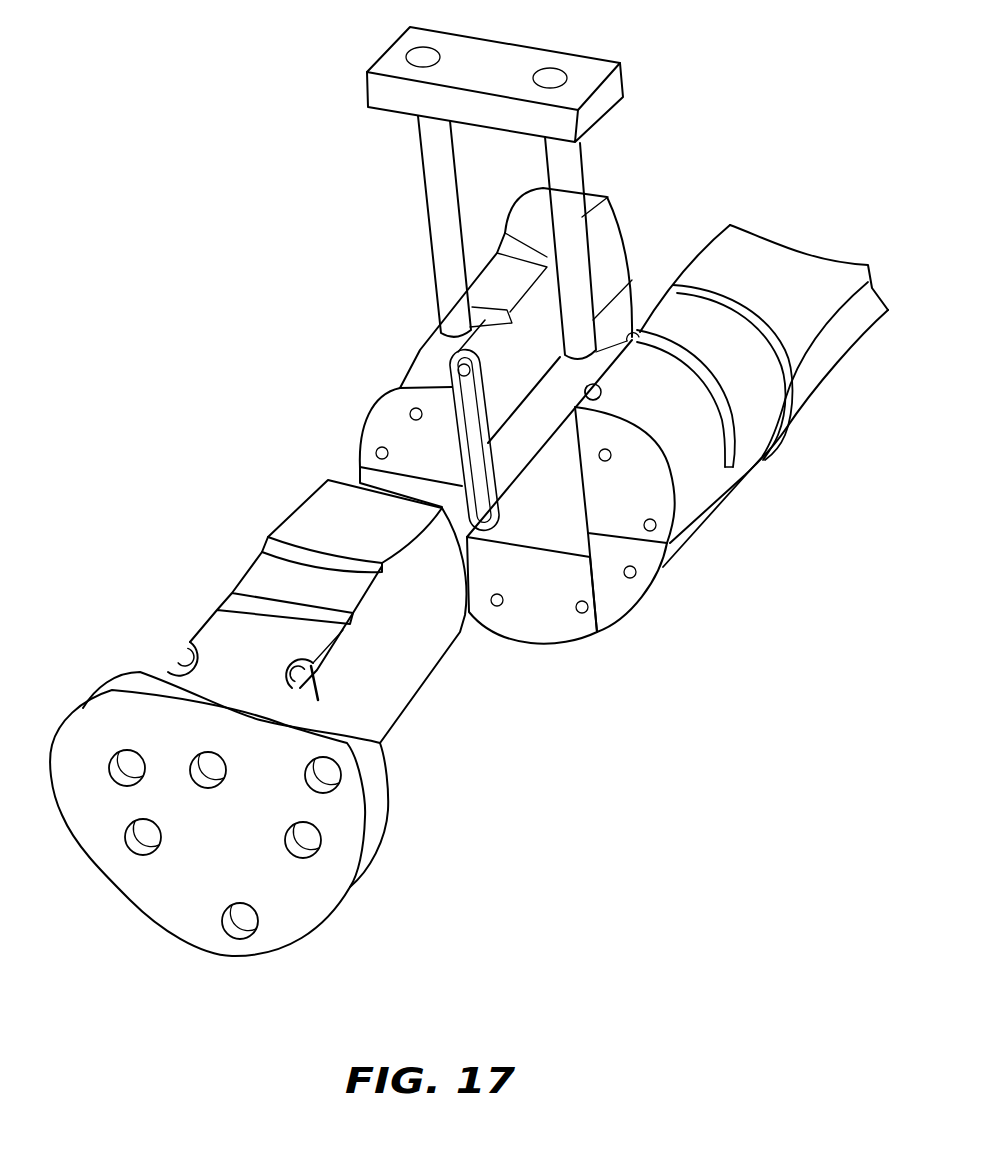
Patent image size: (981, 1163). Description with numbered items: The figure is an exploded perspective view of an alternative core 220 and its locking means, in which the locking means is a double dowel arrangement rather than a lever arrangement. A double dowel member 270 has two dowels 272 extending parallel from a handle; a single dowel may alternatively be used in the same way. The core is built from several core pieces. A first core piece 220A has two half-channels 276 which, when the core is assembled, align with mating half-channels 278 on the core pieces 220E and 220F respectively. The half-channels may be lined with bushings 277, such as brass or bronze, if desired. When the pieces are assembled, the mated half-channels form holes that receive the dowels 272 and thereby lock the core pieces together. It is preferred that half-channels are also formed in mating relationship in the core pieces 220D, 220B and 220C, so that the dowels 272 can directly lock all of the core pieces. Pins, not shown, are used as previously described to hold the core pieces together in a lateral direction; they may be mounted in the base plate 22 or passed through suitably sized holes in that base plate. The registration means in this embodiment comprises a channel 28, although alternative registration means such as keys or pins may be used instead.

The base plate 22 is at (373, 842).
The channel 28 is at (737, 467).
The core 220 is at (592, 862).
The first core piece 220A is at (433, 657).
The core piece 220B is at (527, 628).
The core piece 220C is at (625, 592).
The core piece 220D is at (377, 480).
The core piece 220E is at (380, 432).
The core piece 220F is at (655, 500).
The double dowel member 270 is at (606, 130).
The dowels 272 is at (440, 195).
The half-channels 276 is at (183, 655).
The bushings 277 is at (448, 373).
The mating half-channels 278 is at (460, 358).